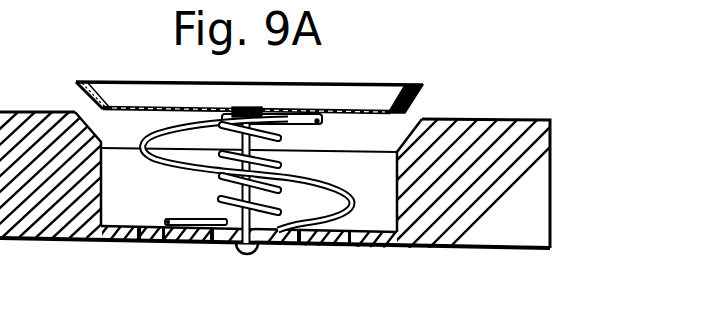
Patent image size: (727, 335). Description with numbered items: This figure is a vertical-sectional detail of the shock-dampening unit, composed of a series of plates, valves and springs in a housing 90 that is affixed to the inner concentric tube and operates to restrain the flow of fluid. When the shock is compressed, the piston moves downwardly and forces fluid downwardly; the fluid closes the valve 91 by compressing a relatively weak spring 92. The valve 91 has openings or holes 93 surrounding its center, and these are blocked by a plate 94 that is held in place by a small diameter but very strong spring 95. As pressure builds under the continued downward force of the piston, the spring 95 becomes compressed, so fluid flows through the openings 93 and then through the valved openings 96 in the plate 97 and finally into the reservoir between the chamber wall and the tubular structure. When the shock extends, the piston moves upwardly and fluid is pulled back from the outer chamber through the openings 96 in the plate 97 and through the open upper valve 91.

The housing 90 is at (527, 119).
The valve 91 is at (425, 82).
The spring 92 is at (153, 122).
The openings 93 is at (232, 108).
The plate 94 is at (285, 124).
The spring 95 is at (220, 179).
The valved openings 96 is at (148, 240).
The plate 97 is at (117, 240).